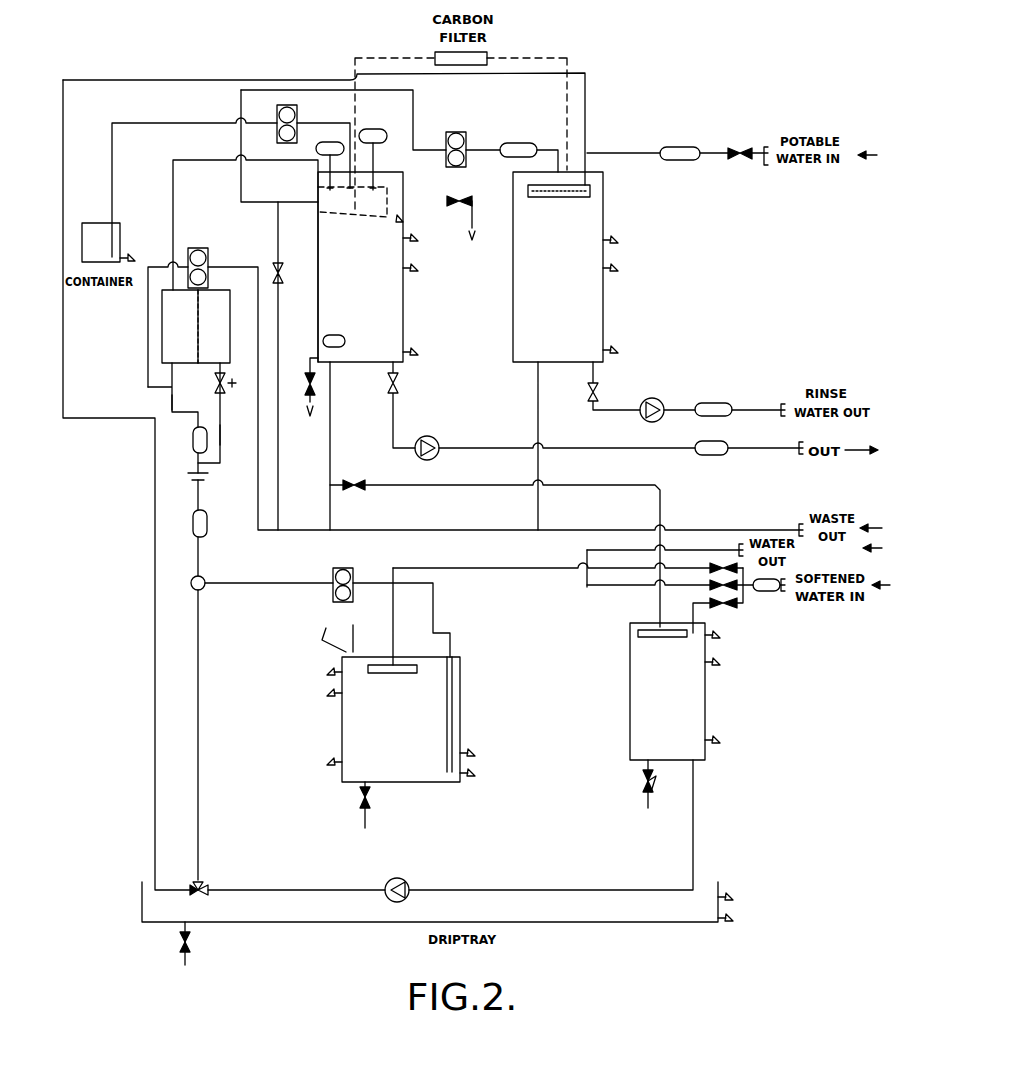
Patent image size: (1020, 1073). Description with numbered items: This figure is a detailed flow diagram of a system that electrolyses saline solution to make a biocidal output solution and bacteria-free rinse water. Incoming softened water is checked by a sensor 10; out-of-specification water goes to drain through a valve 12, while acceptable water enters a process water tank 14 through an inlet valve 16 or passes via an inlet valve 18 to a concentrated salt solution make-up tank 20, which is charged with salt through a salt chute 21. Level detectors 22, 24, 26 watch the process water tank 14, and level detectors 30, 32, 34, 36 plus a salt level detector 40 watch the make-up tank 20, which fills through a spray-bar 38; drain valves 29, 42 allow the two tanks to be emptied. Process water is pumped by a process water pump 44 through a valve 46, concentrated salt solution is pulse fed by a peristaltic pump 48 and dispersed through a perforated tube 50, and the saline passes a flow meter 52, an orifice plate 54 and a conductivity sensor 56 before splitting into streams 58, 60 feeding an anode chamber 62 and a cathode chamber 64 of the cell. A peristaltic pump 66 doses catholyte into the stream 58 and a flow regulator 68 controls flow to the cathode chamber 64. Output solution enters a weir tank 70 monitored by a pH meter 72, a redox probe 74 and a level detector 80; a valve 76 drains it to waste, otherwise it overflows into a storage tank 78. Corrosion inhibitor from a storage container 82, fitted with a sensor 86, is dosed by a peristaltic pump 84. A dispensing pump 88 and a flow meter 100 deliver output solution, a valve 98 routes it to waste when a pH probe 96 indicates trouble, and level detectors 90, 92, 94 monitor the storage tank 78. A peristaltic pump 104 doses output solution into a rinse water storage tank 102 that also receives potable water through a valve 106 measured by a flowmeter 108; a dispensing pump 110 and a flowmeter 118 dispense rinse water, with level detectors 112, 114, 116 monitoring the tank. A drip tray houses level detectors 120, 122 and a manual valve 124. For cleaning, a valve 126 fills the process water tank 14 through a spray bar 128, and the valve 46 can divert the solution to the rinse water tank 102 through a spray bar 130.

The sensor 10 is at (770, 591).
The valve 12 is at (737, 588).
The process water tank 14 is at (630, 724).
The inlet valve 16 is at (737, 606).
The inlet valve 18 is at (712, 566).
The concentrated salt solution make-up tank 20 is at (460, 688).
The salt chute 21 is at (342, 624).
The level detector 22 is at (720, 637).
The level detector 24 is at (720, 664).
The level detector 26 is at (720, 742).
The drain valve 29 is at (644, 786).
The level detector 30 is at (327, 674).
The level detector 32 is at (327, 695).
The level detector 34 is at (475, 755).
The low level detector 36 is at (475, 775).
The spray-bar 38 is at (400, 664).
The salt level detector 40 is at (327, 764).
The drain valve 42 is at (362, 805).
The process water pump 44 is at (407, 880).
The valve 46 is at (206, 884).
The peristaltic pump 48 is at (346, 567).
The perforated tube 50 is at (204, 588).
The flow meter 52 is at (207, 528).
The orifice plate 54 is at (206, 478).
The conductivity sensor 56 is at (193, 445).
The stream 58 is at (170, 400).
The stream 60 is at (222, 432).
The anode chamber 62 is at (180, 326).
The cathode chamber 64 is at (214, 326).
The peristaltic pump 66 is at (206, 247).
The flow regulator 68 is at (224, 388).
The weir tank 70 is at (352, 202).
The pH meter 72 is at (318, 143).
The redox probe 74 is at (380, 128).
The valve 76 is at (462, 194).
The storage tank 78 is at (360, 267).
The level detector 80 is at (403, 220).
The storage container 82 is at (90, 223).
The peristaltic pump 84 is at (297, 108).
The sensor 86 is at (135, 259).
The dispensing pump 88 is at (437, 438).
The level detector 90 is at (418, 240).
The level detector 92 is at (418, 270).
The low level detector 94 is at (418, 354).
The pH probe 96 is at (345, 341).
The valve 98 is at (305, 388).
The flow meter 100 is at (712, 455).
The rinse water storage tank 102 is at (558, 267).
The peristaltic pump 104 is at (458, 131).
The valve 106 is at (744, 160).
The flowmeter 108 is at (680, 160).
The dispensing pump 110 is at (660, 400).
The level detector 112 is at (618, 242).
The level detector 114 is at (618, 270).
The level detector 116 is at (618, 352).
The flowmeter 118 is at (725, 403).
The low level detector 120 is at (733, 920).
The extra high level detector 122 is at (733, 899).
The manual valve 124 is at (188, 946).
The valve 126 is at (366, 480).
The spray bar 128 is at (638, 632).
The spray bar 130 is at (606, 192).